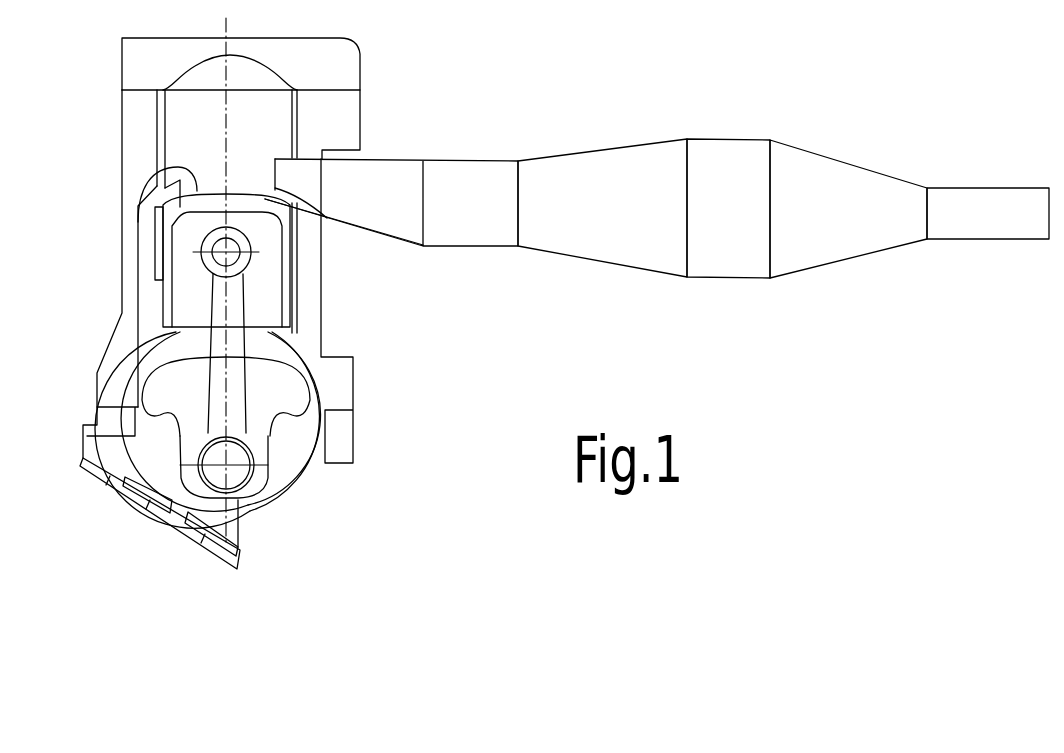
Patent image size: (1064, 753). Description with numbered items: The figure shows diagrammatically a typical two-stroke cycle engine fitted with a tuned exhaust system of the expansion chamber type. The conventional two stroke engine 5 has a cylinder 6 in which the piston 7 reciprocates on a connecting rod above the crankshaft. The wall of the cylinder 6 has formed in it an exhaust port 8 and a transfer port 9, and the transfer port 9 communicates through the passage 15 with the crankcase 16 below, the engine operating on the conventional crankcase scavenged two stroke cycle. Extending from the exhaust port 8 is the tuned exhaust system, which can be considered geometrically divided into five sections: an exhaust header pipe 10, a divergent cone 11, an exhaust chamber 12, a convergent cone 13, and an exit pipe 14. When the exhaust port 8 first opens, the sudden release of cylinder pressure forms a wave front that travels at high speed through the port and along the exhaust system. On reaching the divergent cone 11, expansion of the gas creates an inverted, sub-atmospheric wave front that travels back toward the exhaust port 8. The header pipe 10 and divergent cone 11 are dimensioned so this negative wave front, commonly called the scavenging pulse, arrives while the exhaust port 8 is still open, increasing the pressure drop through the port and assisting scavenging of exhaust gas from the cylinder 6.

The two stroke engine 5 is at (117, 102).
The cylinder 6 is at (158, 143).
The piston 7 is at (142, 177).
The exhaust port 8 is at (323, 211).
The transfer port 9 is at (153, 245).
The exhaust header pipe 10 is at (474, 178).
The divergent cone 11 is at (633, 161).
The exhaust chamber 12 is at (731, 265).
The convergent cone 13 is at (836, 249).
The exit pipe 14 is at (960, 203).
The passage 15 is at (150, 303).
The crankcase 16 is at (113, 454).